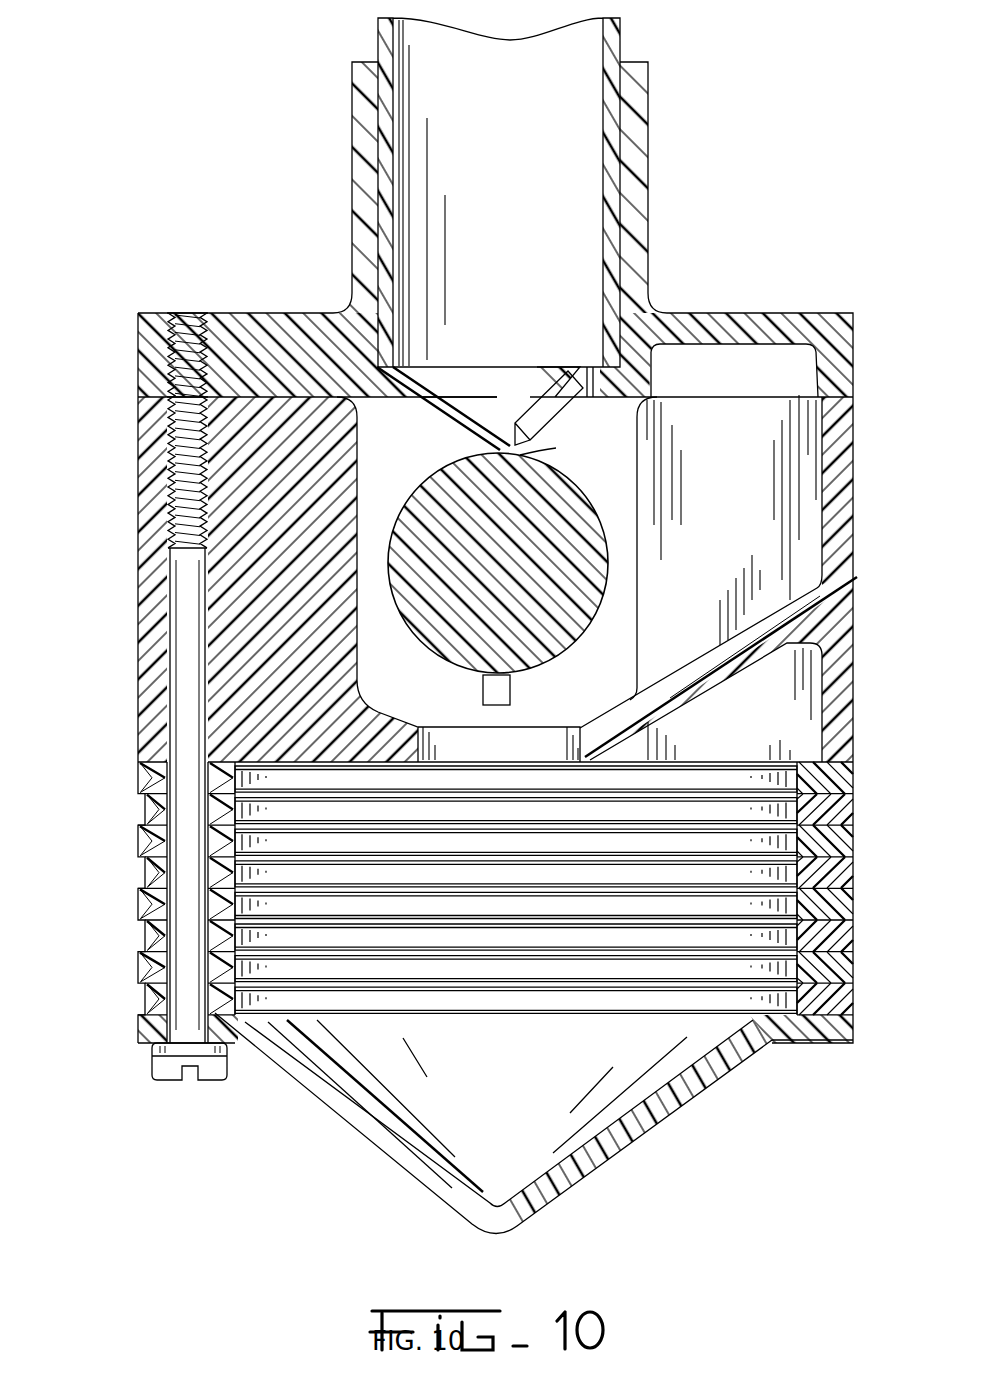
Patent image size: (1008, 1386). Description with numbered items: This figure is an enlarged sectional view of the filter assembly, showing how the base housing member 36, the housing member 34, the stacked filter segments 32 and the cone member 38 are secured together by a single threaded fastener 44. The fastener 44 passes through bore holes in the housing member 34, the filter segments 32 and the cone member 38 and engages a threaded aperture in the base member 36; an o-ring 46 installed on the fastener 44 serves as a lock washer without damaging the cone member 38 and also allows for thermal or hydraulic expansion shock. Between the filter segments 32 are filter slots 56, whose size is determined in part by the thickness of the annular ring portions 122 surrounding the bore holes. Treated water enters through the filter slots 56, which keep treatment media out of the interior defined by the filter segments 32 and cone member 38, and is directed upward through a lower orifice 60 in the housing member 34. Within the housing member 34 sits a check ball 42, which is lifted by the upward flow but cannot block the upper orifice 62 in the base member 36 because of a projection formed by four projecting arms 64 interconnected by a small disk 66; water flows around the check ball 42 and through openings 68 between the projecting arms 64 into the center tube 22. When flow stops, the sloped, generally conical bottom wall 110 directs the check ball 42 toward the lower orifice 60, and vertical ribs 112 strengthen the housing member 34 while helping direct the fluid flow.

The center tube 22 is at (603, 172).
The base housing member 36 is at (306, 312).
The openings 68 is at (507, 400).
The upper orifice 62 is at (489, 392).
The projecting arms 64 is at (432, 425).
The small disk 66 is at (558, 448).
The check ball 42 is at (566, 583).
The ribs 112 is at (355, 612).
The bottom wall 110 is at (690, 690).
The lower orifice 60 is at (486, 758).
The housing member 34 is at (140, 577).
The threaded fastener 44 is at (185, 678).
The o-ring 46 is at (152, 1050).
The filter segments 32 is at (142, 775).
The annular ring portions 122 is at (140, 807).
The filter slots 56 is at (855, 855).
The cone member 38 is at (360, 1135).